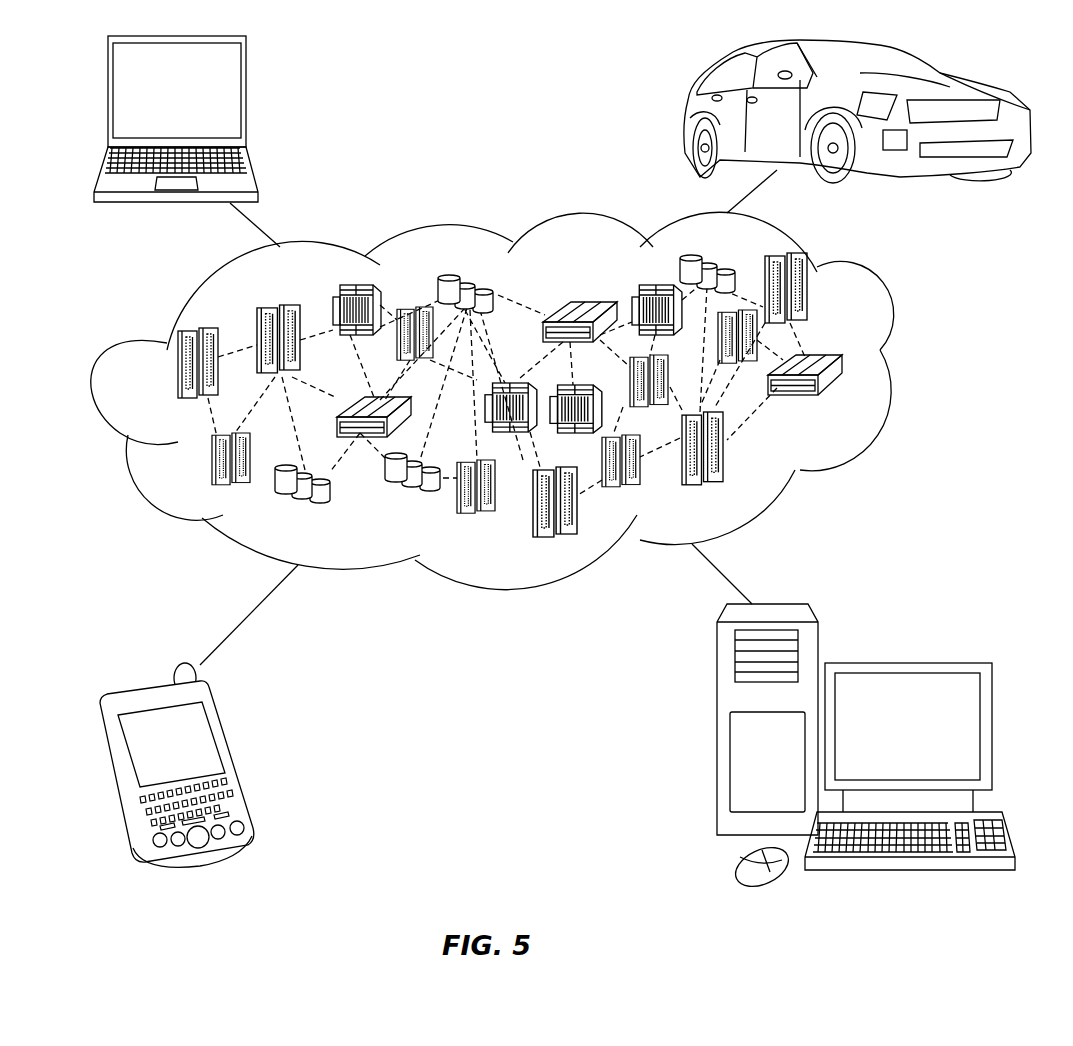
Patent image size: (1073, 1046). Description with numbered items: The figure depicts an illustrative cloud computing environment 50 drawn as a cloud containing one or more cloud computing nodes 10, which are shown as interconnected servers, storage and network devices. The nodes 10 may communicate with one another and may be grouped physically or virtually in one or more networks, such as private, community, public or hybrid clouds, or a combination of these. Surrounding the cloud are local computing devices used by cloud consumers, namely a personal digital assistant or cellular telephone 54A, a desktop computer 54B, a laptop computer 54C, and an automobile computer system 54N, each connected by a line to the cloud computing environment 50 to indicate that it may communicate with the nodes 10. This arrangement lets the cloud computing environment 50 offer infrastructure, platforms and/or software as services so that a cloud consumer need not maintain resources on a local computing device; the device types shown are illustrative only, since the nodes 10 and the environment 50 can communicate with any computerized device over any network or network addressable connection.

The cloud computing node 10 is at (848, 403).
The cloud computing environment 50 is at (905, 373).
The personal digital assistant or cellular telephone 54A is at (235, 758).
The desktop computer 54B is at (906, 663).
The laptop computer 54C is at (245, 100).
The automobile computer system 54N is at (685, 118).